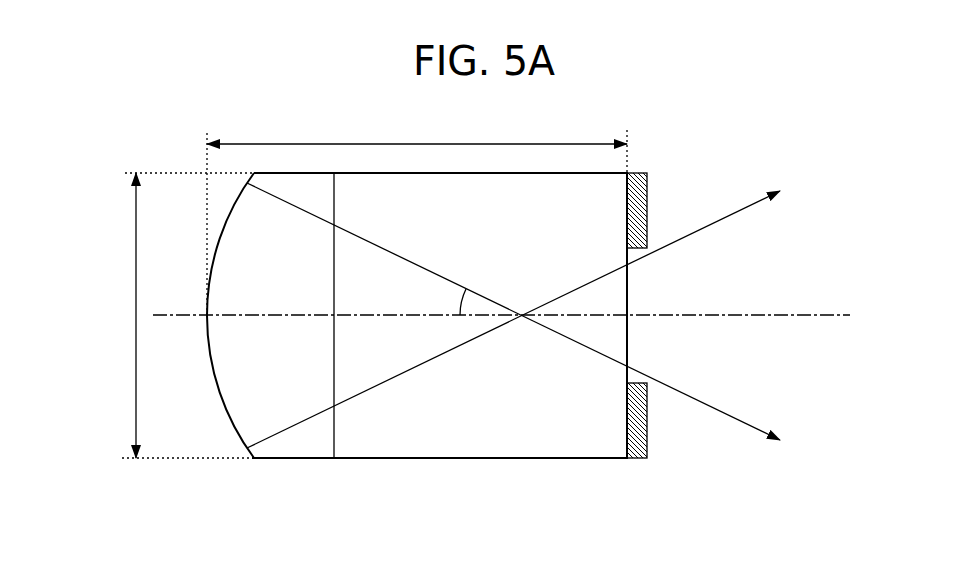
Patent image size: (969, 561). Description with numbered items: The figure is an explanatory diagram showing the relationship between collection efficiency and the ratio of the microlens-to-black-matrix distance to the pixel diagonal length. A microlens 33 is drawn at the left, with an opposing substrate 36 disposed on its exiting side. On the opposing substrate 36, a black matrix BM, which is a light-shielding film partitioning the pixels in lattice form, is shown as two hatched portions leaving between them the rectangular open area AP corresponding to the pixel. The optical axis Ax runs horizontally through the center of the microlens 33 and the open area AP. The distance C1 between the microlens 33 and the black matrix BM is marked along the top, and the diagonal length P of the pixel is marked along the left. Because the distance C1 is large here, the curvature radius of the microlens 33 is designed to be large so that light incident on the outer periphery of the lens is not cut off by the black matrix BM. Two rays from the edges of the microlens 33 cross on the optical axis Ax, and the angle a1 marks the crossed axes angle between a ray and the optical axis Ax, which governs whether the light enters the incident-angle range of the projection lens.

The microlens 33 is at (224, 410).
The opposing substrate 36 is at (455, 458).
The black matrix BM is at (647, 205).
The open area AP is at (632, 373).
The optical axis Ax is at (800, 313).
The angle a1 is at (446, 305).
The distance between microlens and black matrix C1 is at (417, 215).
The diagonal length of pixel P is at (185, 315).